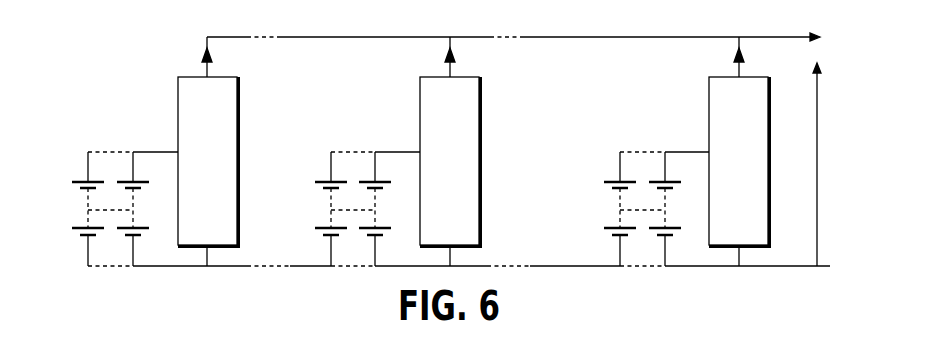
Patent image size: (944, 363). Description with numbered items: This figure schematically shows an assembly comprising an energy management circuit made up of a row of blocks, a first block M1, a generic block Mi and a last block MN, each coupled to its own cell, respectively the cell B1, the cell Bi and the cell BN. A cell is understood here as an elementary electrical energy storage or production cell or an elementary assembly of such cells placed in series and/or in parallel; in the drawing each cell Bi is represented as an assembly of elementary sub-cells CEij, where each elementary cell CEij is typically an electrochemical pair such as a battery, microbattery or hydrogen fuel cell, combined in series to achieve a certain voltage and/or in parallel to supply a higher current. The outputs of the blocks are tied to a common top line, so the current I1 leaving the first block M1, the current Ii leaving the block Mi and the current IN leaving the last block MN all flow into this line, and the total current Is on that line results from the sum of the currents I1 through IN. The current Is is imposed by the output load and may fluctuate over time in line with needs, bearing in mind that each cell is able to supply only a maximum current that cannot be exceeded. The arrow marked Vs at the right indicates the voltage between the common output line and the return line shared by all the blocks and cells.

The block M1 is at (208, 162).
The block Mi is at (450, 162).
The block MN is at (739, 162).
The cell B1 is at (114, 209).
The cell Bi is at (344, 192).
The cell BN is at (643, 209).
The elementary cell CEij is at (318, 179).
The current I1 is at (194, 57).
The current Ii is at (439, 57).
The current IN is at (727, 57).
The current Is is at (518, 22).
The output voltage Vs is at (830, 164).